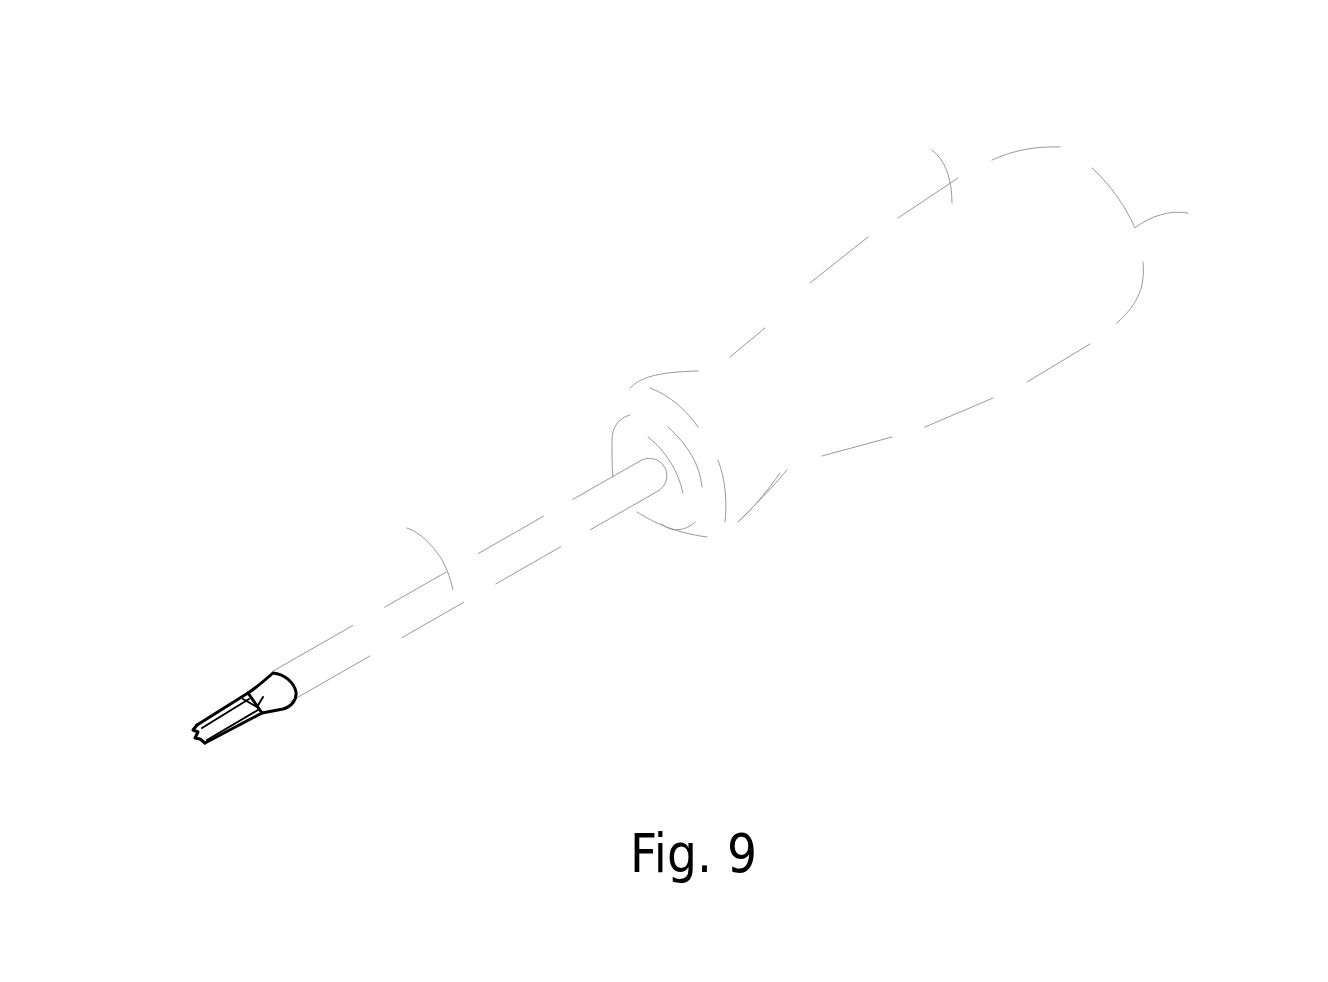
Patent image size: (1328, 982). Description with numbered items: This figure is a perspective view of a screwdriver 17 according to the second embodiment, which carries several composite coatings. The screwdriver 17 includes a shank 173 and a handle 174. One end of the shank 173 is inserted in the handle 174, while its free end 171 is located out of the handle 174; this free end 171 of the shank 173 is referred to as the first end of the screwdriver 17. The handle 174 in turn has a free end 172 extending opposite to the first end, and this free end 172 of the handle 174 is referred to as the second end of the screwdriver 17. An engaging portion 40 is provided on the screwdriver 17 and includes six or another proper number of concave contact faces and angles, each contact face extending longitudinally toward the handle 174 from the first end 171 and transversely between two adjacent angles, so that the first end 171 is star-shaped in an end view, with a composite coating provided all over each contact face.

The screwdriver 17 is at (497, 387).
The engaging portion 40 is at (237, 690).
The free end of the shank (first end) 171 is at (193, 728).
The free end of the handle (second end) 172 is at (1225, 215).
The shank 173 is at (368, 527).
The handle 174 is at (897, 141).